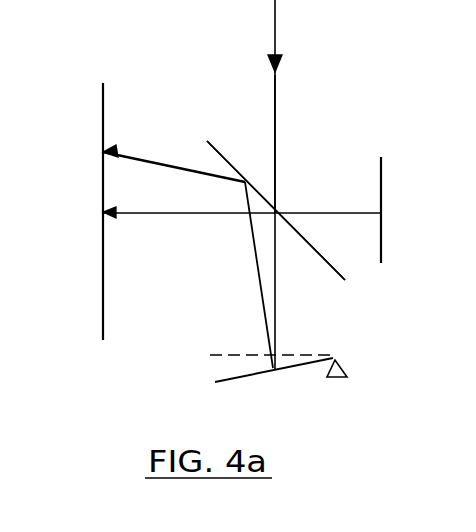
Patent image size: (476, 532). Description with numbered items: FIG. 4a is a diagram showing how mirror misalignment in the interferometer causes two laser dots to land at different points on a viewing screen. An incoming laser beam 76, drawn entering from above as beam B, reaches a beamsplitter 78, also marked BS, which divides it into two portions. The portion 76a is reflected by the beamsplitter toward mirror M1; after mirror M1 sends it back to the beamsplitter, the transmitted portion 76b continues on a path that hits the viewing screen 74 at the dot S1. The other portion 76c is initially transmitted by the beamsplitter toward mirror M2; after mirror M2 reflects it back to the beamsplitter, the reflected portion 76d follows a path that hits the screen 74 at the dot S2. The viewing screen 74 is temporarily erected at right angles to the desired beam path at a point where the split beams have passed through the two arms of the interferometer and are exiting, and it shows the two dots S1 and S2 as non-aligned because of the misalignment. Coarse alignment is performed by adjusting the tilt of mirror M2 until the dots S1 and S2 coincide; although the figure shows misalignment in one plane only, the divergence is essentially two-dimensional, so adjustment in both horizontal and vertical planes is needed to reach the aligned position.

The viewing screen 74 is at (101, 258).
The laser beam 76 is at (276, 133).
The reflected beam portion 76a is at (323, 213).
The transmitted beam portion 76b is at (145, 215).
The transmitted beam portion 76c is at (276, 315).
The reflected beam portion 76d is at (148, 156).
The beamsplitter 78 is at (315, 256).
The incident beam B is at (291, 185).
The beam splitter BS is at (341, 281).
The mirror M1 is at (404, 210).
The mirror M2 is at (278, 384).
The dot S1 is at (67, 213).
The dot S2 is at (67, 151).